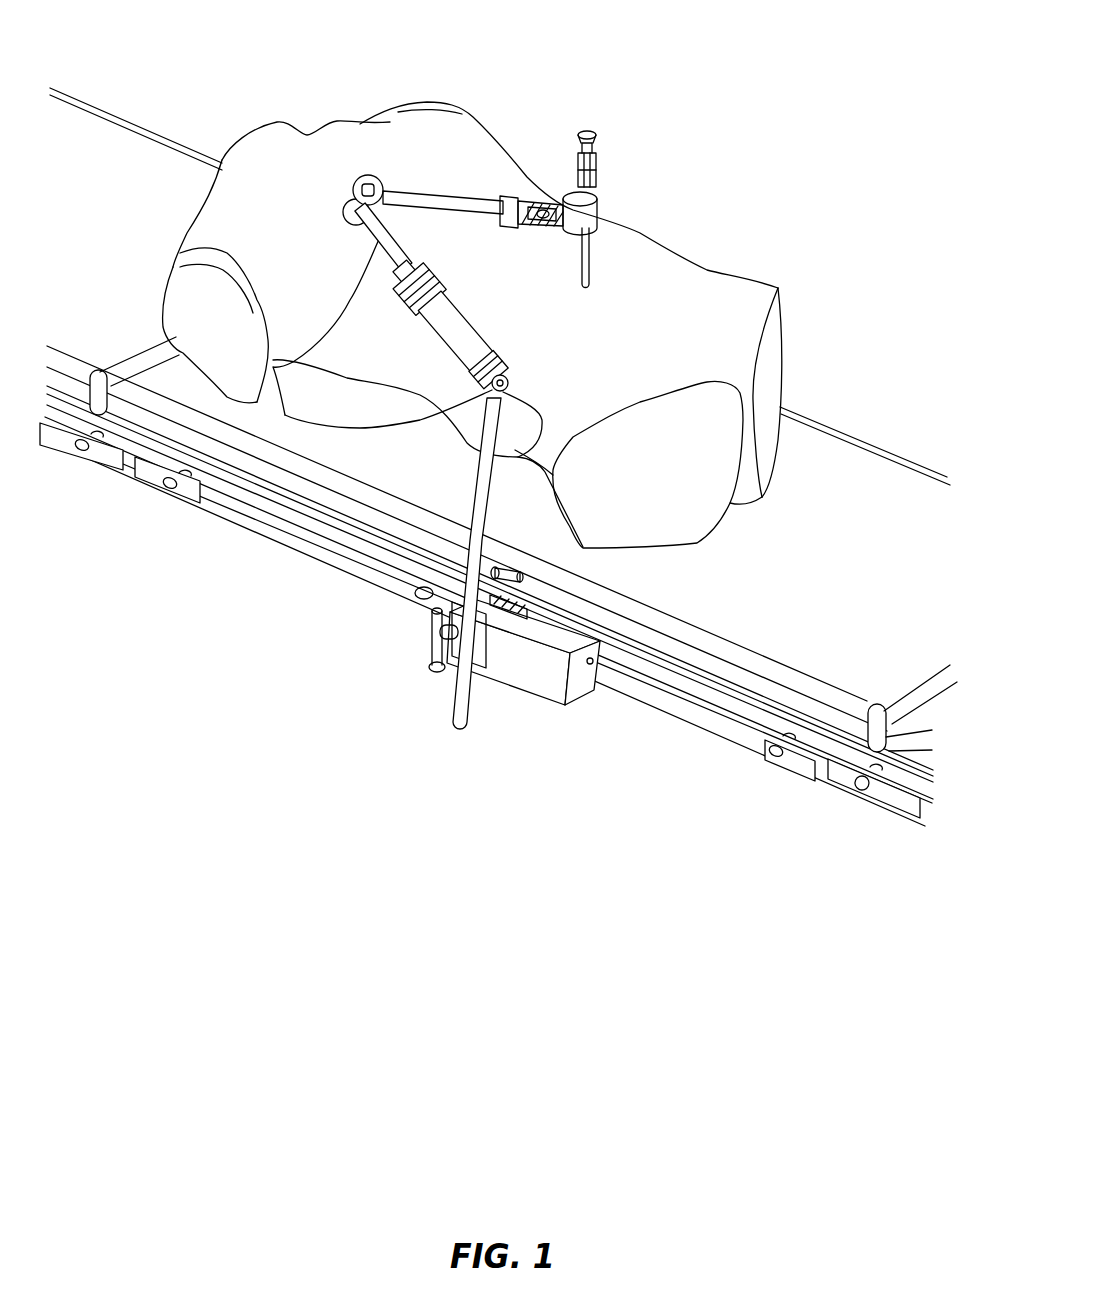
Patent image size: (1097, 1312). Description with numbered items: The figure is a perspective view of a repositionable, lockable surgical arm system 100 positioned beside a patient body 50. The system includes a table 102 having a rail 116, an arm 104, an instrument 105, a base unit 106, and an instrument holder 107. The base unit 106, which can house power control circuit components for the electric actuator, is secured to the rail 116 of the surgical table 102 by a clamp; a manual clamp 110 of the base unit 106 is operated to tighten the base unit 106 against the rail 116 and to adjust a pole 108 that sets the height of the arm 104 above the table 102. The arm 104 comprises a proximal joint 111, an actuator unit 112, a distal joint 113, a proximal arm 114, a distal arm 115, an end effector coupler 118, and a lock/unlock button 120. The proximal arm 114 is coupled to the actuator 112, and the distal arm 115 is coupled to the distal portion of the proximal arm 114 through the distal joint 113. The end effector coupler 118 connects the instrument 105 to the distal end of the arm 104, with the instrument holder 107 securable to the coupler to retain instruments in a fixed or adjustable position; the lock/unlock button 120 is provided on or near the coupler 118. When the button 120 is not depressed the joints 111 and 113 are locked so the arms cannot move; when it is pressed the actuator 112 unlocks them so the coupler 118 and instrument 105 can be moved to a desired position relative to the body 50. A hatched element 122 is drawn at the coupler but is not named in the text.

The body 50 is at (693, 300).
The lockable surgical arm system 100 is at (603, 253).
The table 102 is at (498, 457).
The arm 104 is at (273, 393).
The instrument 105 is at (605, 170).
The base unit 106 is at (532, 683).
The instrument holder 107 is at (571, 186).
The pole 108 is at (453, 702).
The manual clamp 110 is at (427, 632).
The proximal joint 111 is at (500, 398).
The actuator unit 112 is at (345, 434).
The distal joint 113 is at (357, 178).
The proximal arm 114 is at (368, 355).
The distal arm 115 is at (427, 200).
The rail 116 is at (355, 565).
The end effector coupler 118 is at (500, 124).
The lock/unlock button 120 is at (540, 176).
The locking element 122 is at (540, 212).